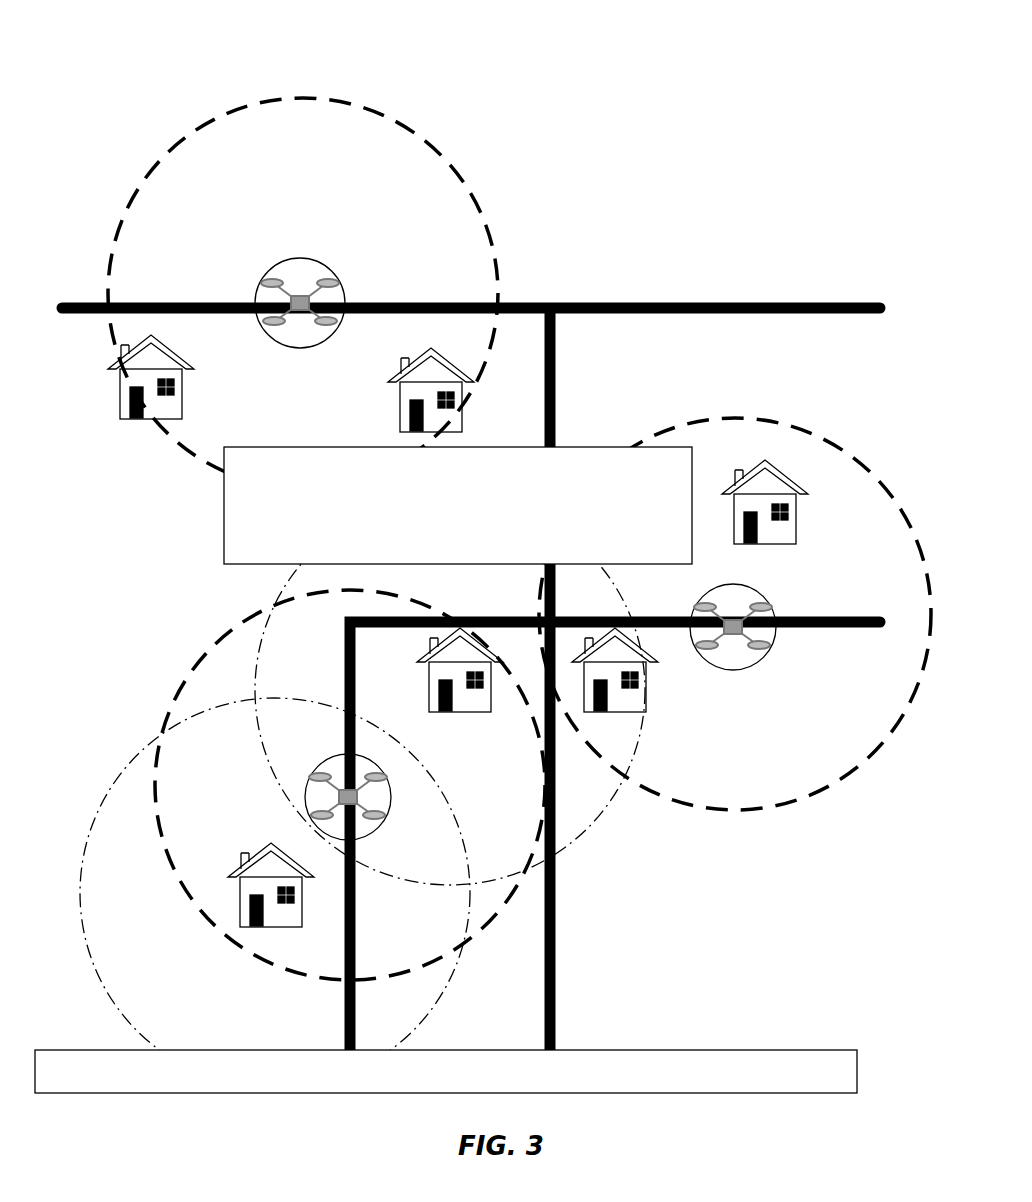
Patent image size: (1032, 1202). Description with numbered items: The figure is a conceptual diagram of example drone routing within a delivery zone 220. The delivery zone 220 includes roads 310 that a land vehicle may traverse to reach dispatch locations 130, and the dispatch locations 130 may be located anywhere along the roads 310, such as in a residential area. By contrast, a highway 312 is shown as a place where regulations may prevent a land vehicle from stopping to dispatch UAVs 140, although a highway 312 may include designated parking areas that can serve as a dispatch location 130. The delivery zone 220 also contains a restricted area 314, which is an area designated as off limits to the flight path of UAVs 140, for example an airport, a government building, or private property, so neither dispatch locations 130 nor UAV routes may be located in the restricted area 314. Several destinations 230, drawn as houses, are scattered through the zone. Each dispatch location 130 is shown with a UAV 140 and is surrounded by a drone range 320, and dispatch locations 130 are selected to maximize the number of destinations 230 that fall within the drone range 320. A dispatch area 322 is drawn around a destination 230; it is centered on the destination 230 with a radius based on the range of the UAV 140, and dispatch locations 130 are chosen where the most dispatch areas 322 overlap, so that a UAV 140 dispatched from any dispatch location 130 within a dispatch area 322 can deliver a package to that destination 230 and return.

The delivery zone 220 is at (128, 40).
The drone range 320 is at (222, 118).
The dispatch area 322 is at (112, 792).
The roads 310 is at (686, 305).
The highway 312 is at (715, 1050).
The restricted area 314 is at (222, 517).
The dispatch location 130 is at (340, 280).
The UAV 140 is at (298, 282).
The destination 230 is at (118, 385).